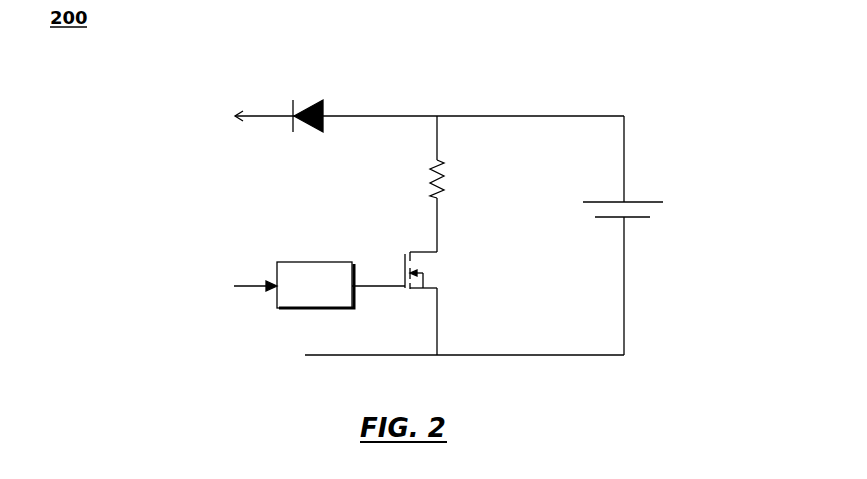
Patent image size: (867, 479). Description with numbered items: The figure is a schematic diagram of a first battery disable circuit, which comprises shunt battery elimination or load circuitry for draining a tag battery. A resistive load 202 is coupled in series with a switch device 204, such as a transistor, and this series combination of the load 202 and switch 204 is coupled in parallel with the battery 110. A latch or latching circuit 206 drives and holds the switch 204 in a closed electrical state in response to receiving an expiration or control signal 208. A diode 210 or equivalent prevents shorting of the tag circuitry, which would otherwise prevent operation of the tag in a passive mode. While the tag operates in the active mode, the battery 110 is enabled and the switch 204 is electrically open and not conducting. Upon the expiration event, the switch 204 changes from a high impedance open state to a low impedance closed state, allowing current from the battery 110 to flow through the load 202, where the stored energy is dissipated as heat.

The battery 110 is at (652, 200).
The resistive load 202 is at (447, 177).
The switch device 204 is at (426, 276).
The latch 206 is at (322, 262).
The control signal 208 is at (243, 283).
The diode 210 is at (317, 100).